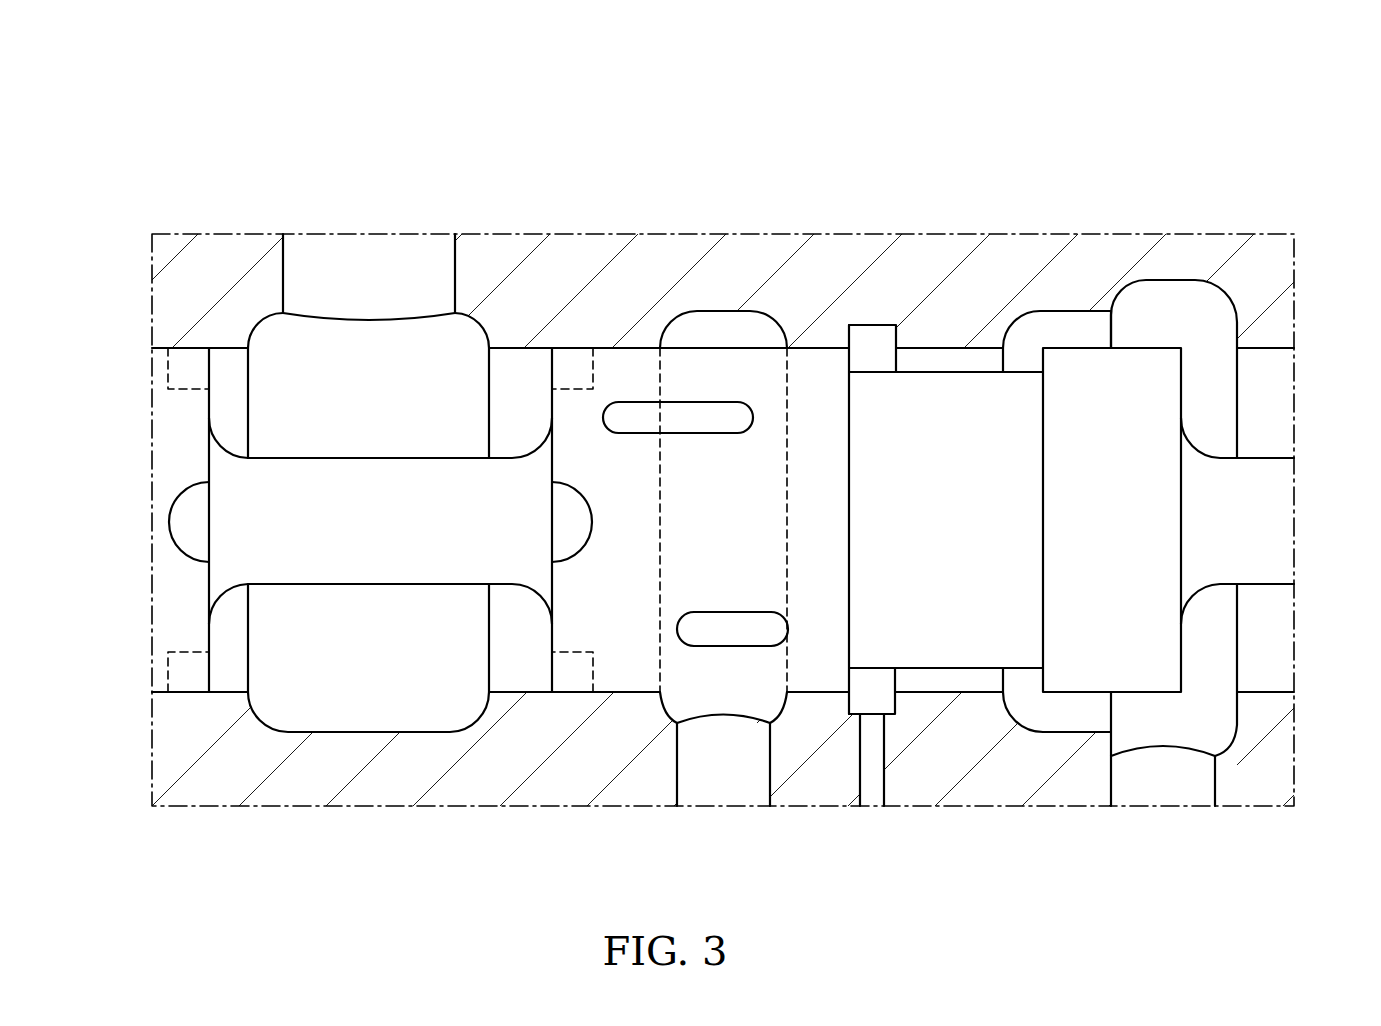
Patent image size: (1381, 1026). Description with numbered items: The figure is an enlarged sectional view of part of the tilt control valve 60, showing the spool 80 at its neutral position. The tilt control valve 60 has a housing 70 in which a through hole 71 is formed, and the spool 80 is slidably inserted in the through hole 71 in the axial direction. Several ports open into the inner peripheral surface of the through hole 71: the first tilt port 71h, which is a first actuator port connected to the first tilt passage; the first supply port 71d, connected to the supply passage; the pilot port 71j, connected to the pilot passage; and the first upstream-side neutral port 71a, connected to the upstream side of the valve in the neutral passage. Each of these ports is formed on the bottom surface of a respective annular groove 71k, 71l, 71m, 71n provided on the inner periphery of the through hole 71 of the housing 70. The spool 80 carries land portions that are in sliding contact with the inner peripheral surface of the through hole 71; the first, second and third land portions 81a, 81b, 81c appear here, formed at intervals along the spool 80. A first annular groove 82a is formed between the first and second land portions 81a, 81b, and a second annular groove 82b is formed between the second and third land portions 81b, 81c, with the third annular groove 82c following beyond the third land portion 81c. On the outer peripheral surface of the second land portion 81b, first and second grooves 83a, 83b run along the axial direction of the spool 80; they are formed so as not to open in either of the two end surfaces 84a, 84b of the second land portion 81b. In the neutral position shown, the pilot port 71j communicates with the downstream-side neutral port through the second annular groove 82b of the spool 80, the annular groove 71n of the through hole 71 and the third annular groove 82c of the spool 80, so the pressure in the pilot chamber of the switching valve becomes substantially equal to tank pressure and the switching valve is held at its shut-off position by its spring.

The tilt control valve 60 is at (1262, 150).
The housing 70 is at (495, 755).
The through hole 71 is at (498, 678).
The first upstream-side neutral port 71a is at (1214, 751).
The first supply port 71d is at (753, 715).
The first tilt port 71h is at (440, 314).
The pilot port 71j is at (882, 710).
The annular groove 71k is at (358, 727).
The annular groove 71l is at (736, 316).
The annular groove 71m is at (876, 332).
The annular groove 71n is at (1168, 284).
The spool 80 is at (1163, 349).
The first land portion 81a is at (194, 435).
The second land portion 81b is at (575, 435).
The third land portion 81c is at (1077, 435).
The first annular groove 82a is at (286, 455).
The second annular groove 82b is at (997, 372).
The third annular groove 82c is at (1257, 453).
The first groove 83a is at (639, 402).
The second groove 83b is at (708, 619).
The end surface 84a is at (550, 405).
The end surface 84b is at (852, 405).